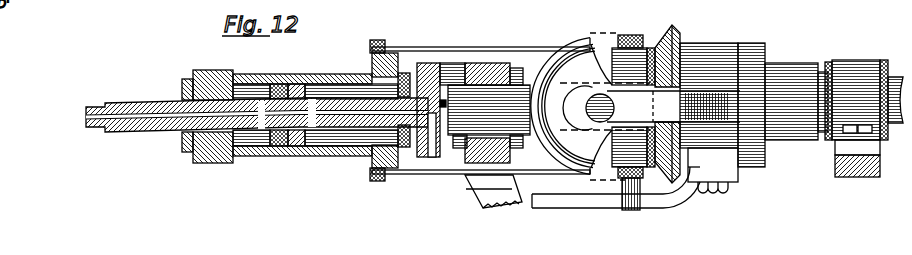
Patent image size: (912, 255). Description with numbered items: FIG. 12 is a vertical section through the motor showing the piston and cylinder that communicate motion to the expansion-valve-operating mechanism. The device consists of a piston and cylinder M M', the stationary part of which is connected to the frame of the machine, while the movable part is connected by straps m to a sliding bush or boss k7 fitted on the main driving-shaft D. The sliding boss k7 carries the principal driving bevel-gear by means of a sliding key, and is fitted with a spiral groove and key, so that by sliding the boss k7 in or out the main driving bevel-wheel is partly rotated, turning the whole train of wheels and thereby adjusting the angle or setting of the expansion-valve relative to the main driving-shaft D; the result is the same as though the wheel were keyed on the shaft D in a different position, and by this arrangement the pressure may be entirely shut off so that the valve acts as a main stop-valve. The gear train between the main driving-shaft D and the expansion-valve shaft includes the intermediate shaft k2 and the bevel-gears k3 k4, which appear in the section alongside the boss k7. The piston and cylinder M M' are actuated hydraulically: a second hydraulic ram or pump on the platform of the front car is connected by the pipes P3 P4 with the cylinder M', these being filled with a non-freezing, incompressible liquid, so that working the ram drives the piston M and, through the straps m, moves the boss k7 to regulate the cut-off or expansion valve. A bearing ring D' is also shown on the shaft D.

The pipe P3 is at (86, 116).
The piston M is at (281, 135).
The cylinder M' is at (351, 134).
The straps m is at (427, 47).
The pipe P4 is at (427, 158).
The bearing ring on shaft D D' is at (481, 87).
The main driving-shaft D is at (675, 111).
The bevel-gear k3 is at (590, 106).
The shaft k2 is at (586, 107).
The bevel-gear k4 is at (680, 30).
The sliding boss k7 is at (788, 68).